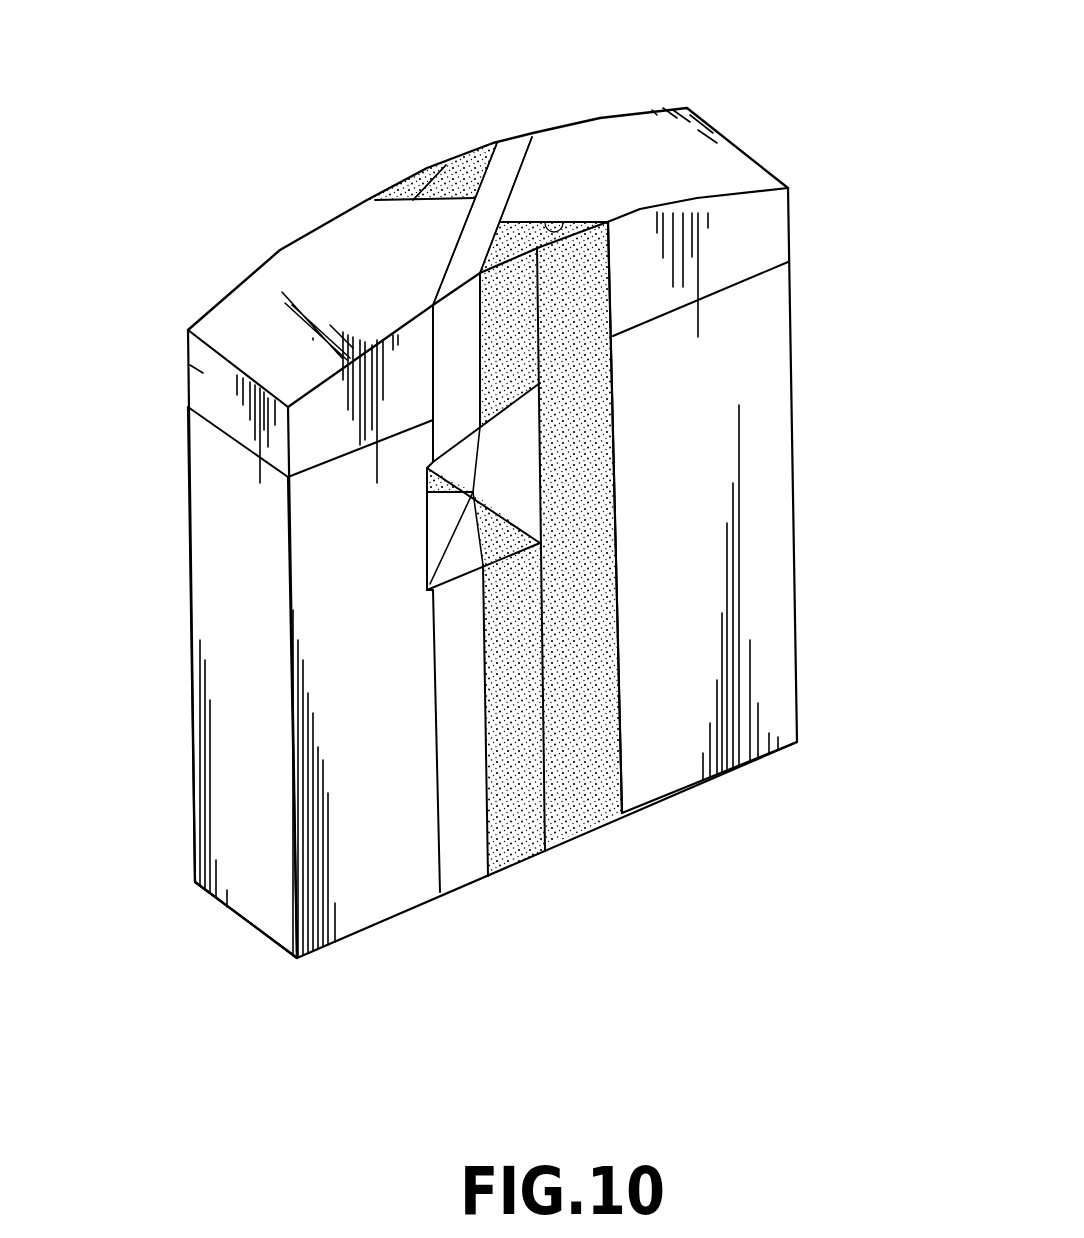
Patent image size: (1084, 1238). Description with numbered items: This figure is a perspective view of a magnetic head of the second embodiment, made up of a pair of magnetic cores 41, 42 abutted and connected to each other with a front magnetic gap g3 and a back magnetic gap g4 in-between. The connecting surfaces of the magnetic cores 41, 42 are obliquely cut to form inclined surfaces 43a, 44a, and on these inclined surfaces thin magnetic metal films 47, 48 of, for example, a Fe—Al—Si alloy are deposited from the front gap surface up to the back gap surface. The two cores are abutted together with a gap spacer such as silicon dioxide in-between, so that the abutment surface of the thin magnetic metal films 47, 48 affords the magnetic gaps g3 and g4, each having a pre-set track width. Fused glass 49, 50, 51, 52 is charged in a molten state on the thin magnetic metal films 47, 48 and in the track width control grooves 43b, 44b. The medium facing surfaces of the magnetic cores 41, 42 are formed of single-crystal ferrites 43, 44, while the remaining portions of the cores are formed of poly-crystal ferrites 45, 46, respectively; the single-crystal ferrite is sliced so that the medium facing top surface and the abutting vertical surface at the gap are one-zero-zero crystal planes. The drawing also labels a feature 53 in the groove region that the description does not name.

The magnetic core 41 is at (170, 645).
The magnetic core 42 is at (812, 468).
The single-crystal ferrite 43 is at (188, 362).
The inclined surface 43a is at (458, 260).
The track width control groove 43b is at (427, 176).
The single-crystal ferrite 44 is at (737, 168).
The inclined surface 44a is at (514, 174).
The track width control groove 44b is at (567, 221).
The poly-crystal ferrite 45 is at (210, 825).
The poly-crystal ferrite 46 is at (782, 712).
The thin magnetic metal film 47 is at (462, 870).
The thin magnetic metal film 48 is at (512, 165).
The fused glass 49 is at (517, 852).
The fused glass 50 is at (477, 152).
The fused glass 51 is at (427, 170).
The fused glass 52 is at (592, 820).
The track width regulating groove 53 is at (427, 548).
The magnetic gap g3 is at (487, 190).
The magnetic gap g4 is at (491, 493).